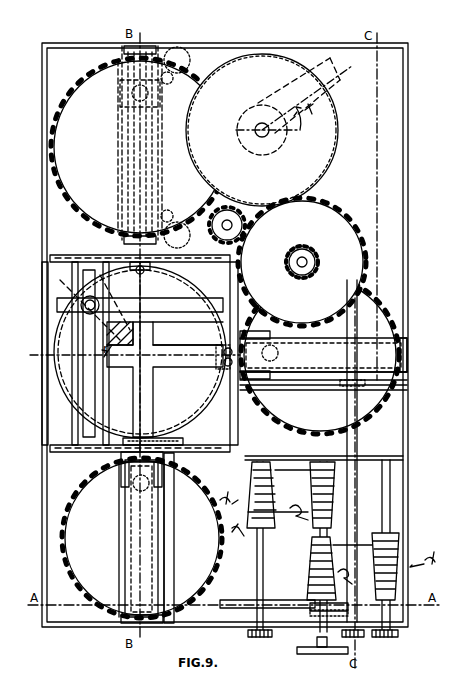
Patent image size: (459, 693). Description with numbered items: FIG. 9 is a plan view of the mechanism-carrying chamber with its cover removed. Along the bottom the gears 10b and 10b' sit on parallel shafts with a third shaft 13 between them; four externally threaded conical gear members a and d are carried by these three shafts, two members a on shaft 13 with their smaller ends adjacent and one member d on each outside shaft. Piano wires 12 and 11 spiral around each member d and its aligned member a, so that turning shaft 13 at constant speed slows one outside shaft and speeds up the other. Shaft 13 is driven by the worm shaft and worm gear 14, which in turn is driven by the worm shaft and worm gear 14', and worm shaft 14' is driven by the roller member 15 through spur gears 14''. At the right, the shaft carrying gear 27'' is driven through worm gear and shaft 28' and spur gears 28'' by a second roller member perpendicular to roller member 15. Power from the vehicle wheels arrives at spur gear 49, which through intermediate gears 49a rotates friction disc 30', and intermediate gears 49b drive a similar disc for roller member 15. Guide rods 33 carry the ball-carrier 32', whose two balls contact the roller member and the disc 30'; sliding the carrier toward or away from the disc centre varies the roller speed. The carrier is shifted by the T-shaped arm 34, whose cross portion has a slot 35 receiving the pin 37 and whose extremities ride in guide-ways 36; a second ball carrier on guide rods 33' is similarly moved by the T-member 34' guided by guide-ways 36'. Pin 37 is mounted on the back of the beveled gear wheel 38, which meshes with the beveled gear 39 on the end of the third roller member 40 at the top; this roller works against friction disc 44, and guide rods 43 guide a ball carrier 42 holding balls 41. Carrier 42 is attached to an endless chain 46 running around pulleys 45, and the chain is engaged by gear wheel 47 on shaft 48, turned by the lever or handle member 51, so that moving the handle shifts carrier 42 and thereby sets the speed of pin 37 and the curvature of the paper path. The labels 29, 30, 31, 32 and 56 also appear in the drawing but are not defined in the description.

The friction disc 44 is at (92, 80).
The third roller member 40 is at (150, 190).
The balls 41 is at (140, 145).
The ball carrier 42 is at (150, 115).
The guide rods 43 is at (120, 162).
The pulleys 45 is at (190, 58).
The endless chain 46 is at (168, 84).
The engaging gear wheel 47 is at (330, 170).
The shaft 48 is at (262, 123).
The lever or handle member 51 is at (342, 92).
The spur gear 49 is at (240, 256).
The intermediate gears 49a is at (320, 264).
The intermediate gears 49b is at (220, 440).
The friction disc 30' is at (321, 355).
The carriage 32 is at (323, 355).
The guide 29 is at (322, 348).
The roller 31 is at (279, 354).
The guide rods 33 is at (323, 362).
The worm gear and shaft 28' is at (323, 398).
The spur gears 28'' is at (210, 364).
The cross bar 56 is at (70, 246).
The guide-ways 36 is at (54, 367).
The guide-ways 36' is at (144, 353).
The beveled gear wheel 38 is at (172, 276).
The beveled gear 39 is at (145, 272).
The pin 37 is at (140, 321).
The slot 35 is at (86, 392).
The T-shaped arm 34 is at (165, 379).
The T-member 34' is at (135, 357).
The spur gears 14'' is at (153, 428).
The roller member 15 is at (135, 530).
The ball-carrier 32' is at (141, 538).
The guide rods 33' is at (145, 537).
The worm shaft and worm gear 14' is at (184, 538).
The wires 11 is at (248, 470).
The wires 12 is at (268, 474).
The conical gear members a is at (292, 544).
The conical gear members d is at (327, 529).
The connecting rod 30 is at (297, 507).
The third shaft 13 is at (329, 614).
The worm shaft and worm gear 14 is at (284, 627).
The gear 10b' is at (268, 644).
The gear 27'' is at (367, 645).
The gear 10b is at (399, 642).